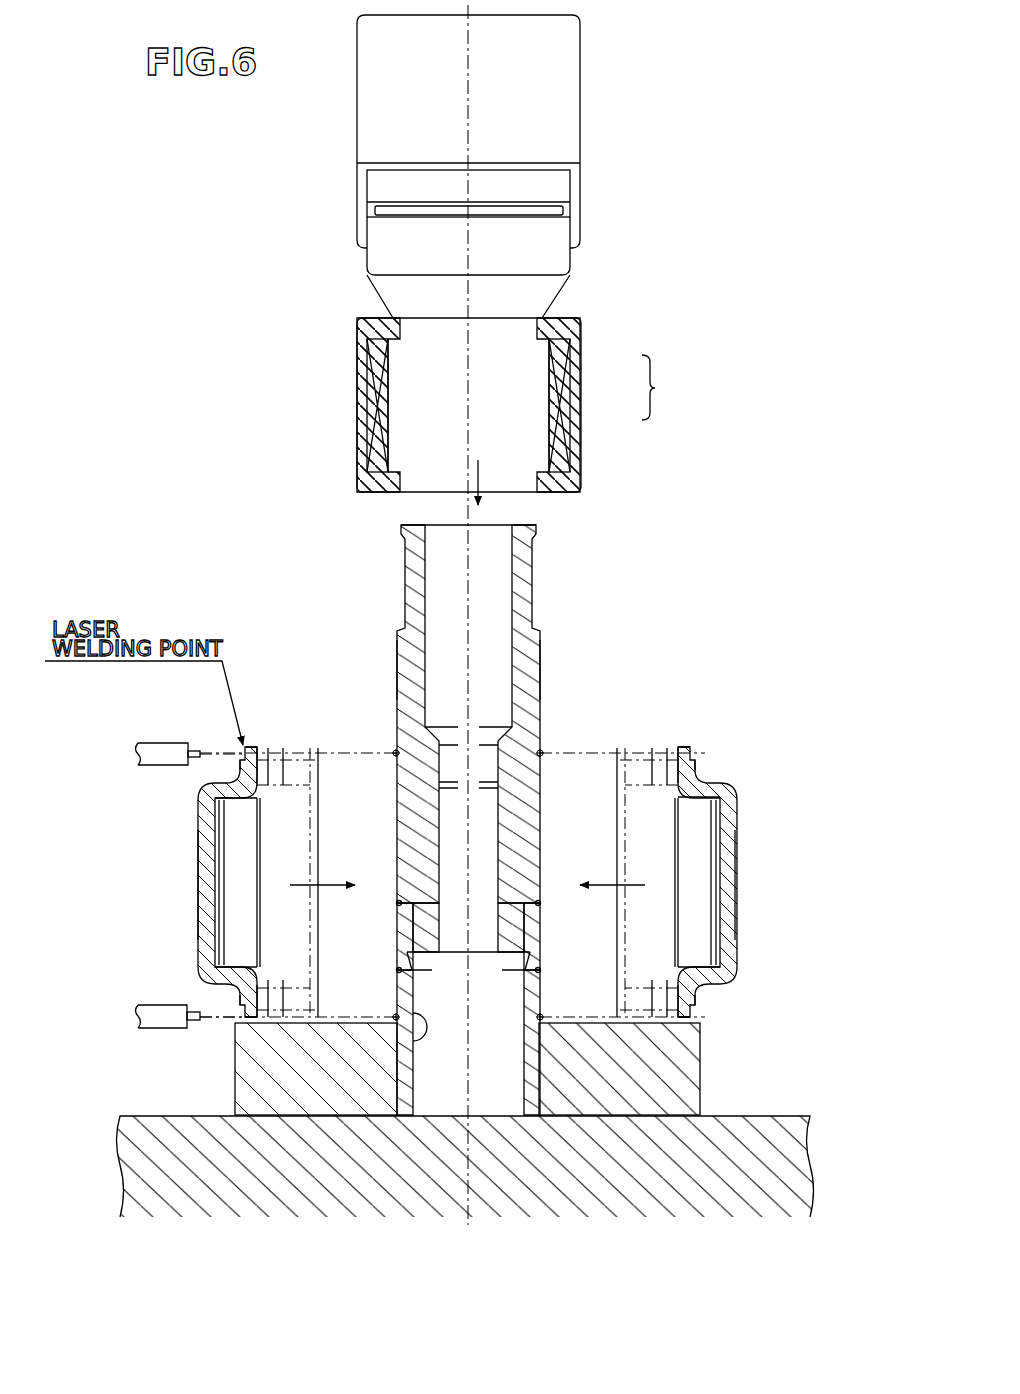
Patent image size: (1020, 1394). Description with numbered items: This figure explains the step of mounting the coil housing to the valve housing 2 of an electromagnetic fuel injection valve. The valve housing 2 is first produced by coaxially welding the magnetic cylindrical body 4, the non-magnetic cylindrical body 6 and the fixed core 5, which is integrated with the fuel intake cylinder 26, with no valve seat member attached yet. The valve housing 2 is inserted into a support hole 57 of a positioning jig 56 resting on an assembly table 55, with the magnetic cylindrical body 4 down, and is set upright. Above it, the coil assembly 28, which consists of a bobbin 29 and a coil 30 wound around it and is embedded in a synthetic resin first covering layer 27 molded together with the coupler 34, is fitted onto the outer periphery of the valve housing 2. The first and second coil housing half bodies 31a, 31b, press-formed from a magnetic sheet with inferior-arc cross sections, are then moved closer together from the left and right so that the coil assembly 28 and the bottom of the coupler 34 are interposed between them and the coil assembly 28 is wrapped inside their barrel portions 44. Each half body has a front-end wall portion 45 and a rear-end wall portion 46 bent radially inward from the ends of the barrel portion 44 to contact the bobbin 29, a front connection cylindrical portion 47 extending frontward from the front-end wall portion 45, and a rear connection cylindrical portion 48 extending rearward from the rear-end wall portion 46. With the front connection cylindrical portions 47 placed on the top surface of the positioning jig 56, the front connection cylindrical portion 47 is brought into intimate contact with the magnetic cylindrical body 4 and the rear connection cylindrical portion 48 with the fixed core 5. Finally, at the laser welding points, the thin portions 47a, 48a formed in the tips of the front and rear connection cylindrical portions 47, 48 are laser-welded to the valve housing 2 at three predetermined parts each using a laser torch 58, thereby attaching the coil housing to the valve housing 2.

The coupler 34 is at (567, 107).
The first covering layer 27 is at (577, 445).
The coil assembly 28 is at (663, 387).
The bobbin 29 is at (550, 357).
The coil 30 is at (562, 415).
The valve housing 2 is at (545, 645).
The fuel intake cylinder 26 is at (528, 720).
The fixed core 5 is at (530, 830).
The non-magnetic cylindrical body 6 is at (540, 933).
The magnetic cylindrical body 4 is at (536, 1075).
The support hole 57 is at (401, 1016).
The positioning jig 56 is at (255, 1082).
The assembly table 55 is at (145, 1168).
The first coil housing half body 31a is at (196, 858).
The second coil housing half body 31b is at (740, 850).
The barrel portion 44 is at (205, 912).
The rear-end wall portion 46 is at (233, 800).
The front-end wall portion 45 is at (232, 968).
The rear connection cylindrical portion 48 is at (243, 768).
The thin portion 48a is at (252, 745).
The front connection cylindrical portion 47 is at (240, 1003).
The thin portion 47a is at (252, 1023).
The laser torch 58 is at (166, 748).